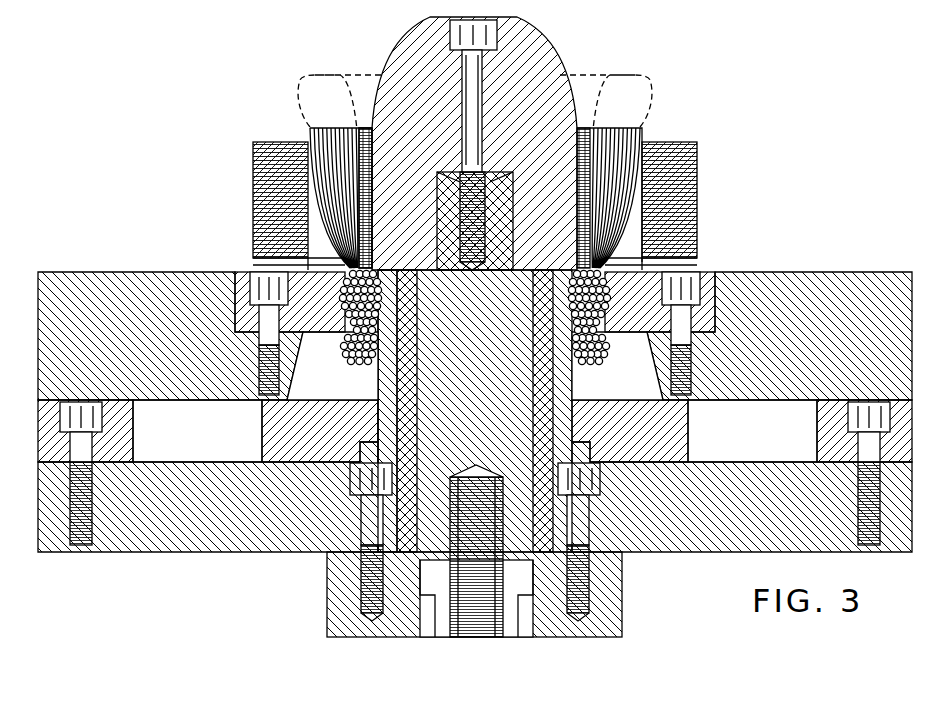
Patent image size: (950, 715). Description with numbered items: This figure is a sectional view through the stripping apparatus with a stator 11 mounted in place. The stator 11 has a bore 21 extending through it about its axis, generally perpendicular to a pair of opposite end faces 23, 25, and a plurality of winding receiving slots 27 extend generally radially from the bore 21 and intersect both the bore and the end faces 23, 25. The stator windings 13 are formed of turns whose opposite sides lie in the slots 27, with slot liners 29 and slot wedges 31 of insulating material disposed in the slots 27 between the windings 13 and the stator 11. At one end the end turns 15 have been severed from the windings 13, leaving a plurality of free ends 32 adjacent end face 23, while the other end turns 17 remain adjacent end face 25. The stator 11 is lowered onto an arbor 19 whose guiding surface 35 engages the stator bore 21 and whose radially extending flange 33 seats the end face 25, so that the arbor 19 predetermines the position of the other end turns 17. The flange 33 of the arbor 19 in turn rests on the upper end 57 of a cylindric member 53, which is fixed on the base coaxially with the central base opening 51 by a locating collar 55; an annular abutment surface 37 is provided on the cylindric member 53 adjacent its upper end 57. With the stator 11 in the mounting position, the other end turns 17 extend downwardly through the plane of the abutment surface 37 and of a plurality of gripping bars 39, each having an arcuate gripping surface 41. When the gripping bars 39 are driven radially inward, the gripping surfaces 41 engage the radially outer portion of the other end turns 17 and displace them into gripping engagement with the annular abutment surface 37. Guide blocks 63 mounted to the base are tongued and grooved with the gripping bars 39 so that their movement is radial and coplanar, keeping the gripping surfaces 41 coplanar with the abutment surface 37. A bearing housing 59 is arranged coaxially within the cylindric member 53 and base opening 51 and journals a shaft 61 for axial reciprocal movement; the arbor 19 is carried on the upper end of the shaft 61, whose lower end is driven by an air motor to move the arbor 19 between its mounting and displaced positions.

The stator 11 is at (661, 167).
The stator windings 13 is at (316, 172).
The end turns 15 is at (653, 76).
The other end turn 17 is at (342, 370).
The arbor 19 is at (478, 137).
The bore 21 is at (366, 214).
The end face 23 is at (266, 140).
The end face 25 is at (250, 270).
The winding receiving slots 27 is at (322, 140).
The slot liners 29 is at (645, 138).
The slot wedges 31 is at (587, 135).
The free ends 32 is at (630, 125).
The flange 33 is at (371, 268).
The guiding surface 35 is at (403, 62).
The annular abutment surface 37 is at (382, 302).
The gripping bars 39 is at (132, 282).
The gripping surface 41 is at (340, 302).
The base opening 51 is at (400, 542).
The cylindric member 53 is at (390, 422).
The locating collar 55 is at (270, 433).
The upper end 57 is at (533, 307).
The bearing housing 59 is at (616, 590).
The shaft 61 is at (495, 453).
The guide blocks 63 is at (127, 441).